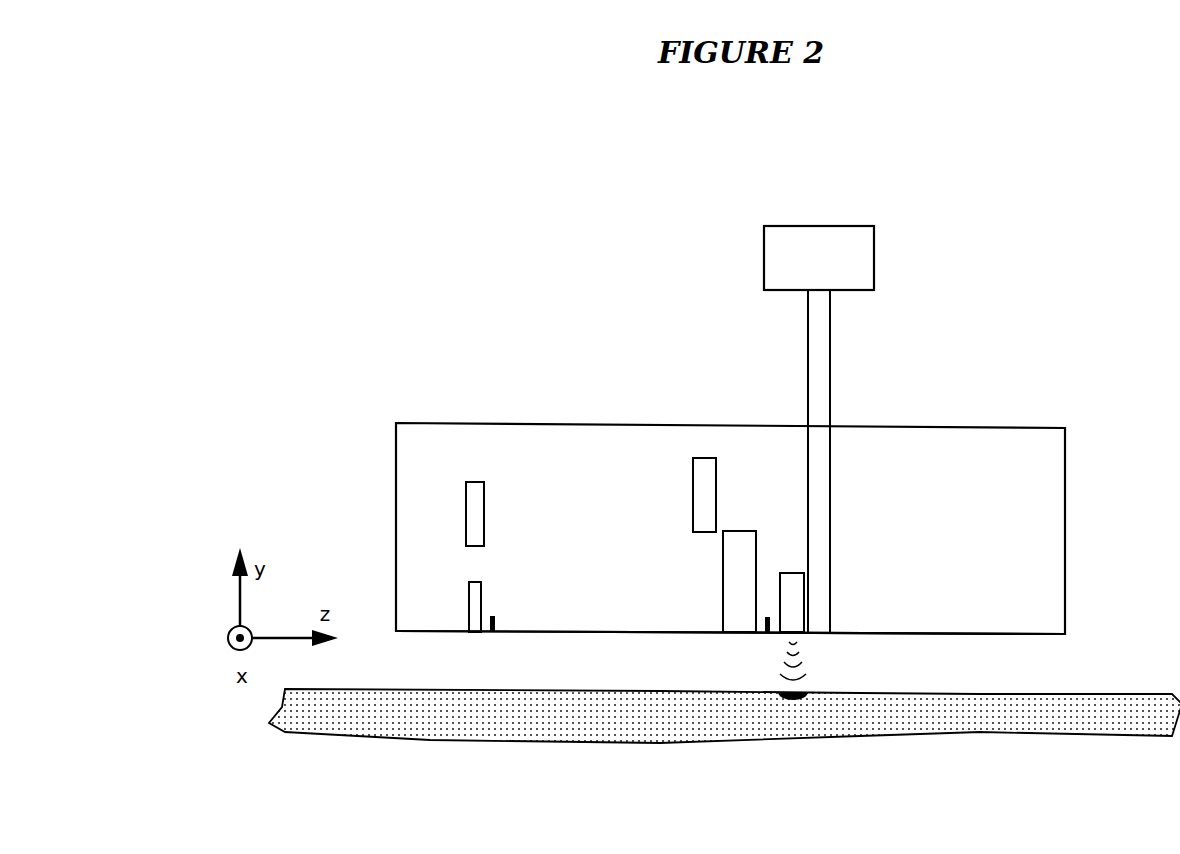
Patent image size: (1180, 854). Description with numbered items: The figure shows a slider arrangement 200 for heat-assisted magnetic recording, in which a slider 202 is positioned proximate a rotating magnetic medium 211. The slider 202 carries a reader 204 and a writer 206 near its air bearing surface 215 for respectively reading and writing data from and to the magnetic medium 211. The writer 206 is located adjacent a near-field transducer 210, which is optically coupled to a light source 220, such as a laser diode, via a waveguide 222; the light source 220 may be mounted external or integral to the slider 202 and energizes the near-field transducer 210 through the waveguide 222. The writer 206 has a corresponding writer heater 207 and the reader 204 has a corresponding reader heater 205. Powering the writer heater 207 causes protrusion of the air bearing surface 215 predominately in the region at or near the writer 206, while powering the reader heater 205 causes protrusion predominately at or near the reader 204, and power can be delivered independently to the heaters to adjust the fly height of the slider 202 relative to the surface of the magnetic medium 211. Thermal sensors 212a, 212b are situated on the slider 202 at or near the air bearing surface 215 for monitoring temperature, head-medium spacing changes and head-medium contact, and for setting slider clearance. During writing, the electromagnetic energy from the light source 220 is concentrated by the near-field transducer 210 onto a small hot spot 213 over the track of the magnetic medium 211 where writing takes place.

The slider arrangement 200 is at (480, 262).
The slider 202 is at (1097, 400).
The reader 204 is at (469, 598).
The reader heater 205 is at (484, 515).
The writer 206 is at (723, 591).
The writer heater 207 is at (693, 492).
The near-field transducer 210 is at (790, 572).
The magnetic medium 211 is at (1124, 693).
The thermal sensor 212a is at (768, 634).
The thermal sensor 212b is at (493, 634).
The hot spot 213 is at (790, 700).
The air bearing surface 215 is at (955, 636).
The light source 220 is at (874, 252).
The waveguide 222 is at (830, 362).